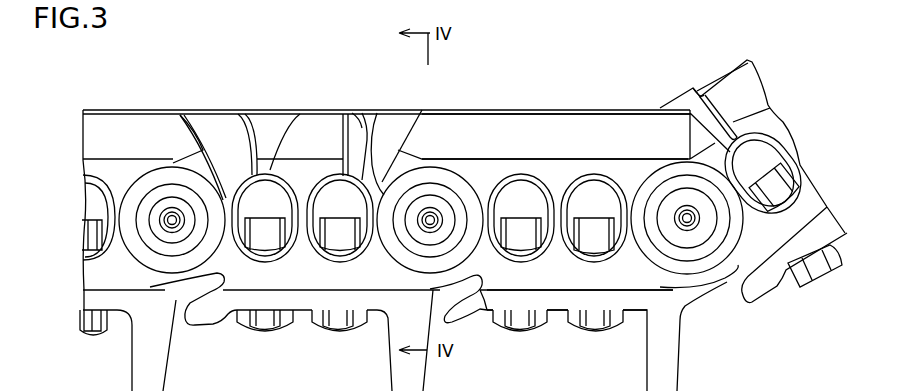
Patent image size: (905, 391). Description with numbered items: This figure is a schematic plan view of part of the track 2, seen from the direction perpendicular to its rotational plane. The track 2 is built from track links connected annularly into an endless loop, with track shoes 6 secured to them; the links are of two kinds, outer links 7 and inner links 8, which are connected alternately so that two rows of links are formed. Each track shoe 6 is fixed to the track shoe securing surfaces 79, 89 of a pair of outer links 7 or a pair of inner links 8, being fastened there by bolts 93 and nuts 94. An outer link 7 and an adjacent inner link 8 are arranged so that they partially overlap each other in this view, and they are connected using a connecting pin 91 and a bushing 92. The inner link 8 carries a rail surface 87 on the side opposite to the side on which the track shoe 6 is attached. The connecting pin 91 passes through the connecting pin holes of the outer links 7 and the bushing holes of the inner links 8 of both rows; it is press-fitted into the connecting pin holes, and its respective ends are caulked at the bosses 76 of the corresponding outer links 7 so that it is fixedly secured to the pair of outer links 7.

The track 2 is at (312, 71).
The track shoe 6 is at (558, 300).
The outer link 7 is at (472, 110).
The inner link 8 is at (390, 130).
The boss 76 is at (172, 173).
The track shoe securing surface 79 is at (503, 292).
The rail surface 87 is at (210, 103).
The track shoe securing surface 89 is at (248, 316).
The connecting pin 91 is at (173, 250).
The bushing 92 is at (120, 290).
The bolt 93 is at (262, 320).
The nut 94 is at (264, 235).